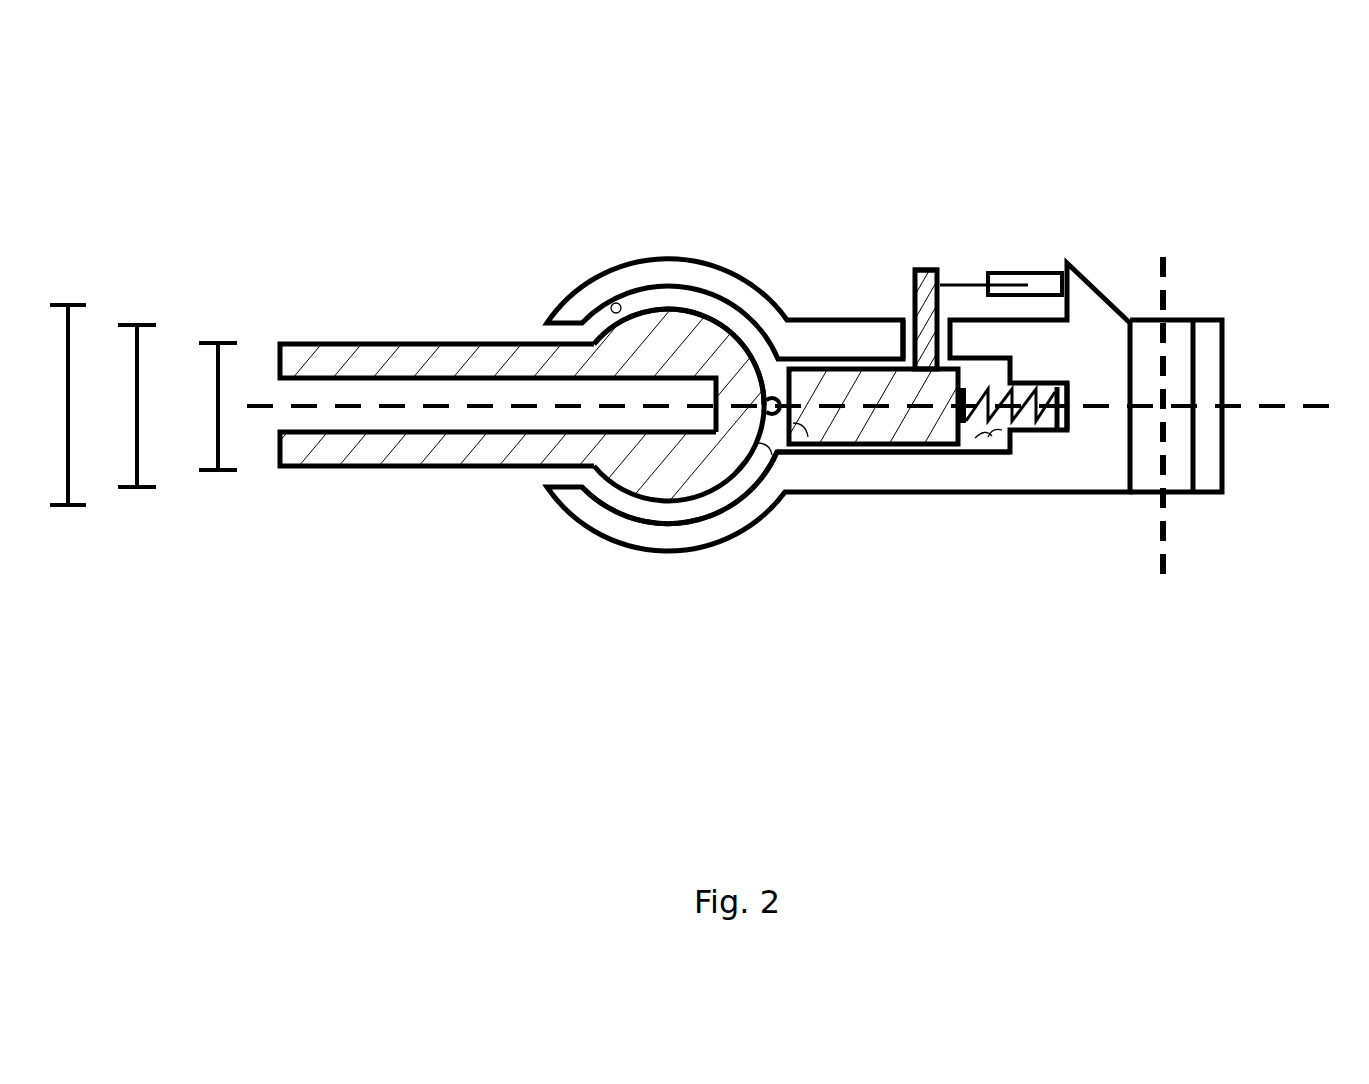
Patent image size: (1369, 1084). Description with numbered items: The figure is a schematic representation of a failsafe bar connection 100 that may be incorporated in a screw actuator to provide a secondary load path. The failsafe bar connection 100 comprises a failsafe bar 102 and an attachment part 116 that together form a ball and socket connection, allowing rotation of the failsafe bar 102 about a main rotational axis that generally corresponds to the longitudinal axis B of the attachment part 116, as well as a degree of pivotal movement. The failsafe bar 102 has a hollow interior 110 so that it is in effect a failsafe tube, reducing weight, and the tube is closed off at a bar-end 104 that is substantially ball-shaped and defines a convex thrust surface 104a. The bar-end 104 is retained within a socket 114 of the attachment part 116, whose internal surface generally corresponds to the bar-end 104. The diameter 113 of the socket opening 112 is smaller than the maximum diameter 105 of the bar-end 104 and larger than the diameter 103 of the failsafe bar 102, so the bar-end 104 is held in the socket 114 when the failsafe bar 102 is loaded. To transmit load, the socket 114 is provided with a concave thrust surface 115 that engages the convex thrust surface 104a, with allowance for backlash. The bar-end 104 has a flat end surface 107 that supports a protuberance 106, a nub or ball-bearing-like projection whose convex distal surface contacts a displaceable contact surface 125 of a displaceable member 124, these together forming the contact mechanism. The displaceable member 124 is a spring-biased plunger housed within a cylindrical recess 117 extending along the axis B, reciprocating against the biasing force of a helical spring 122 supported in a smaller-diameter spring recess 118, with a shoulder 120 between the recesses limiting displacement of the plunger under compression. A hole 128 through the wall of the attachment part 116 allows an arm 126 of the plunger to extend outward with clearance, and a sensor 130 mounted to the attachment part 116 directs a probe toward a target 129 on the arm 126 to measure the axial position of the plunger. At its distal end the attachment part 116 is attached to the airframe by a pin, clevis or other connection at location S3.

The failsafe bar connection 100 is at (216, 121).
The failsafe bar 102 is at (362, 450).
The diameter of the failsafe bar 103 is at (217, 386).
The bar-end 104 is at (678, 473).
The convex thrust surface 104a is at (672, 303).
The maximum diameter of the bar-end 105 is at (66, 386).
The protuberance 106 is at (773, 397).
The flat end surface 107 is at (772, 453).
The hollow interior 110 is at (385, 392).
The socket opening 112 is at (570, 493).
The diameter of the socket opening 113 is at (137, 387).
The socket 114 is at (635, 505).
The concave thrust surface 115 is at (608, 303).
The attachment part 116 is at (1096, 312).
The plunger recess 117 is at (975, 438).
The spring recess 118 is at (1062, 432).
The shoulder 120 is at (990, 437).
The spring 122 is at (1044, 425).
The displaceable member 124 is at (876, 428).
The displaceable contact surface 125 is at (816, 457).
The arm 126 is at (927, 270).
The hole 128 is at (907, 335).
The target 129 is at (932, 277).
The sensor 130 is at (1033, 273).
The location S3 is at (1163, 399).
The longitudinal axis B is at (804, 408).